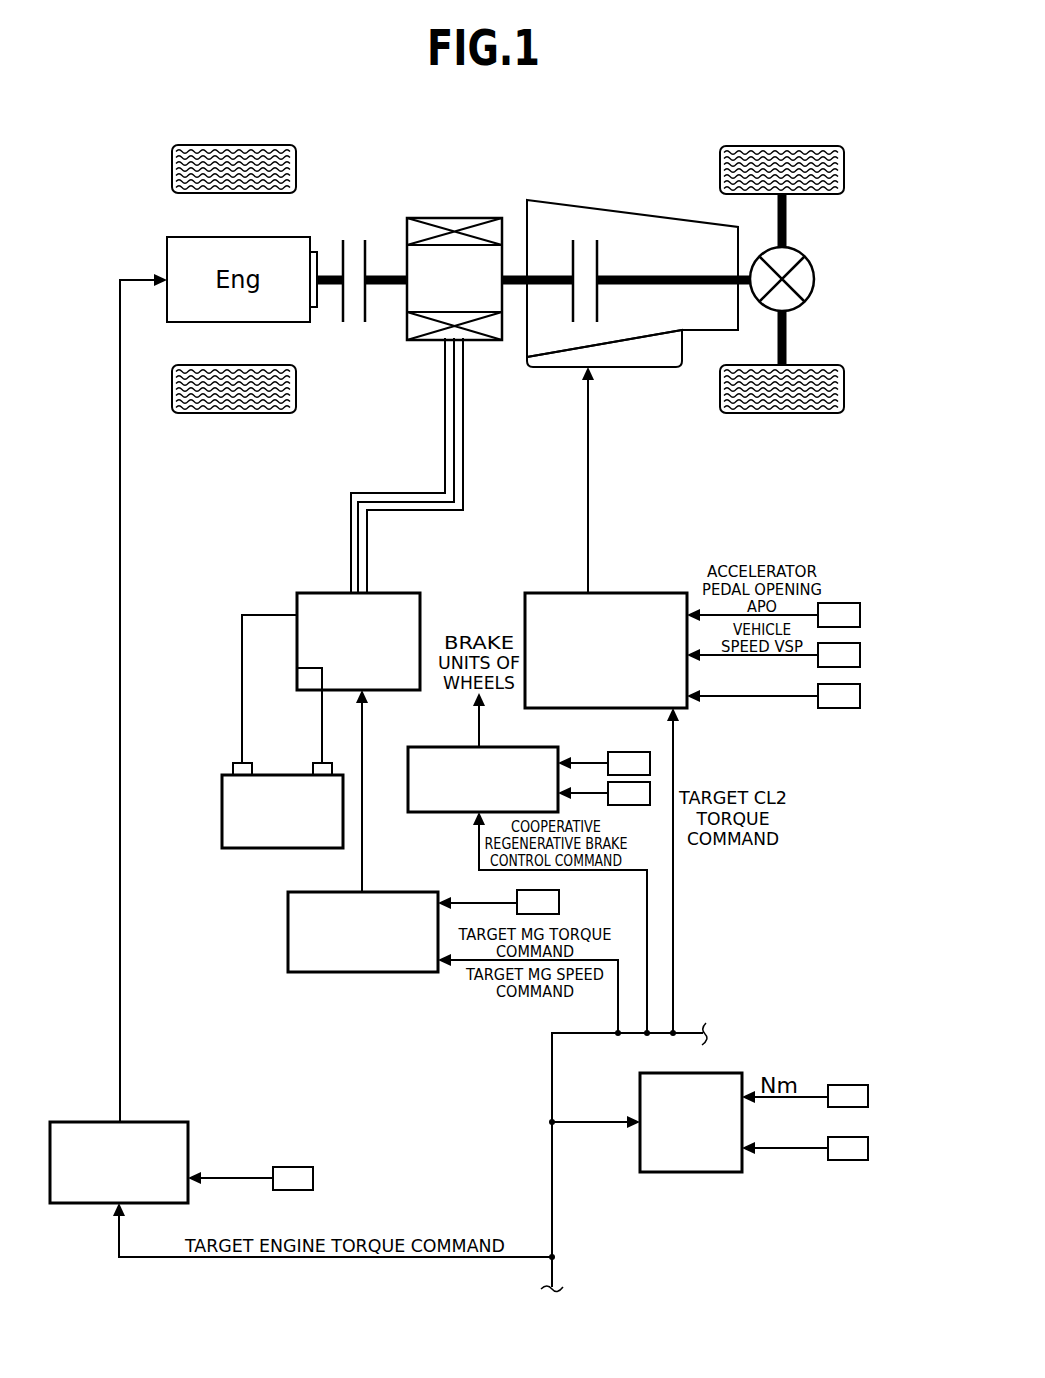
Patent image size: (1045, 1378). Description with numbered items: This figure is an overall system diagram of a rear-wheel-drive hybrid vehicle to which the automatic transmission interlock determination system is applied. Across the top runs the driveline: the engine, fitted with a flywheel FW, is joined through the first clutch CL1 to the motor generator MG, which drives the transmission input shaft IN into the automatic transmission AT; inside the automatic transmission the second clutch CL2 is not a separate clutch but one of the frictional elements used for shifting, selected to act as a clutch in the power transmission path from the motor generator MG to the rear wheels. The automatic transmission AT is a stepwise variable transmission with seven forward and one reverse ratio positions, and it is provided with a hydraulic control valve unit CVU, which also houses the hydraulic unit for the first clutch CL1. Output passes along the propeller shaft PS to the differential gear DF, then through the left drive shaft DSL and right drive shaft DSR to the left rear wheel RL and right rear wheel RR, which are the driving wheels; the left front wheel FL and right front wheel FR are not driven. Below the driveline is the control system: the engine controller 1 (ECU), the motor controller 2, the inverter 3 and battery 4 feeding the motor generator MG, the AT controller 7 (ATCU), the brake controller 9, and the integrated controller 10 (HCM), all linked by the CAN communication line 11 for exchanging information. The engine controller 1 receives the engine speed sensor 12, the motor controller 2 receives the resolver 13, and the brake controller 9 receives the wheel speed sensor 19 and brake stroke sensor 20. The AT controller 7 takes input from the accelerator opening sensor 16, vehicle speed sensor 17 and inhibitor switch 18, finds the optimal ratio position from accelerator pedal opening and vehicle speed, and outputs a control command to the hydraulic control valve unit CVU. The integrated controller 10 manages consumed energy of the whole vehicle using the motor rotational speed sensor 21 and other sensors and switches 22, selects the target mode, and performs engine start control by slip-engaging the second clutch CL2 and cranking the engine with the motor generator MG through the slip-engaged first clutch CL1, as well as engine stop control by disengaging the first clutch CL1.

The engine controller 1 is at (188, 1150).
The motor controller 2 is at (407, 892).
The inverter 3 is at (407, 590).
The battery 4 is at (282, 775).
The AT controller 7 is at (620, 593).
The brake controller 9 is at (423, 747).
The integrated controller 10 is at (723, 1073).
The CAN communication line 11 is at (552, 1048).
The engine speed sensor 12 is at (314, 1176).
The resolver 13 is at (559, 901).
The accelerator opening sensor 16 is at (861, 612).
The vehicle speed sensor 17 is at (861, 652).
The inhibitor switch 18 is at (861, 693).
The wheel speed sensor 19 is at (621, 752).
The brake stroke sensor 20 is at (630, 806).
The motor rotational speed sensor 21 is at (869, 1096).
The other sensors and switches 22 is at (869, 1148).
The right front wheel FR is at (172, 157).
The left front wheel FL is at (172, 395).
The right rear wheel RR is at (842, 169).
The left rear wheel RL is at (842, 385).
The flywheel FW is at (317, 255).
The first clutch CL1 is at (353, 267).
The motor generator MG is at (454, 265).
The transmission input shaft IN is at (518, 273).
The automatic transmission AT is at (633, 201).
The second clutch CL2 is at (584, 269).
The propeller shaft PS is at (746, 292).
The hydraulic control valve unit CVU is at (638, 370).
The differential gear DF is at (815, 277).
The right drive shaft DSR is at (787, 217).
The left drive shaft DSL is at (787, 337).